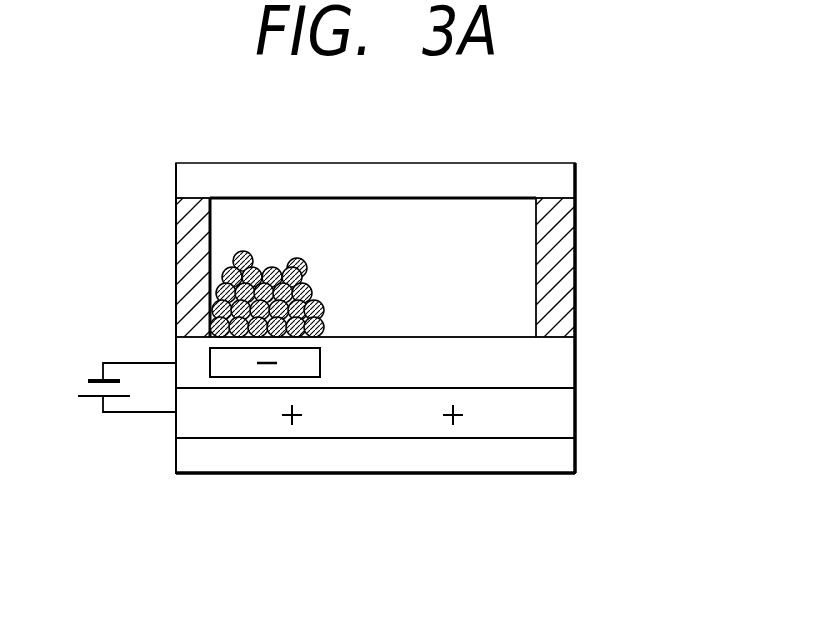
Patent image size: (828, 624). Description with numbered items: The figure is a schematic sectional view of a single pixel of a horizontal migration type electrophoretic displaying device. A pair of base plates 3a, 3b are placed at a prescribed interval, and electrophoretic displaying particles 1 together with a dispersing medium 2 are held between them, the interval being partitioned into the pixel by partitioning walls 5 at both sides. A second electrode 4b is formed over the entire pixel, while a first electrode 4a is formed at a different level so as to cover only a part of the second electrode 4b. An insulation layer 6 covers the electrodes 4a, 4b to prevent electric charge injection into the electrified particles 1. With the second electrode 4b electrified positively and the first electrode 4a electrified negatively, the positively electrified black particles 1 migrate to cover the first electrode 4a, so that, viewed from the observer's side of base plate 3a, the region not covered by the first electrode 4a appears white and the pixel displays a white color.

The electrophoretic displaying particles 1 is at (262, 257).
The dispersing medium 2 is at (510, 237).
The base plate 3a is at (557, 183).
The base plate 3b is at (558, 461).
The first electrode 4a is at (235, 367).
The second electrode 4b is at (558, 415).
The partitioning walls 5 is at (195, 262).
The insulation layer 6 is at (558, 363).